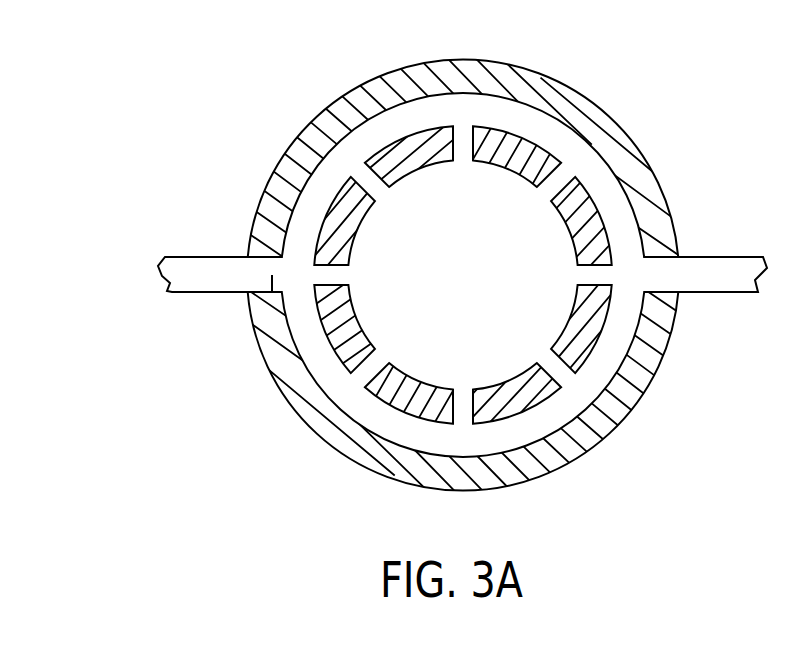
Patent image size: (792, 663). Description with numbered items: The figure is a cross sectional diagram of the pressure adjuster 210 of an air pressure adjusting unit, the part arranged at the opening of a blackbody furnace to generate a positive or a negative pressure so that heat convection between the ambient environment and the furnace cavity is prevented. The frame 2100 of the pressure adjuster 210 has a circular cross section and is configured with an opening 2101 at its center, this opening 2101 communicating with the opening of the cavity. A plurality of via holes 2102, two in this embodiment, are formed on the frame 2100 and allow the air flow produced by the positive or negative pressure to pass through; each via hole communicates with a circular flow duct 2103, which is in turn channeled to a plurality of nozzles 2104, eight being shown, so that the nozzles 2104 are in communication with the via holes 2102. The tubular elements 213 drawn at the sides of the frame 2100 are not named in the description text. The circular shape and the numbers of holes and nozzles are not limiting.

The pressure adjuster 210 is at (250, 46).
The frame 2100 is at (525, 65).
The opening 2101 is at (497, 291).
The via holes 2102 is at (260, 327).
The circular flow duct 2103 is at (550, 133).
The nozzles 2104 is at (325, 272).
The tube 213 is at (195, 295).